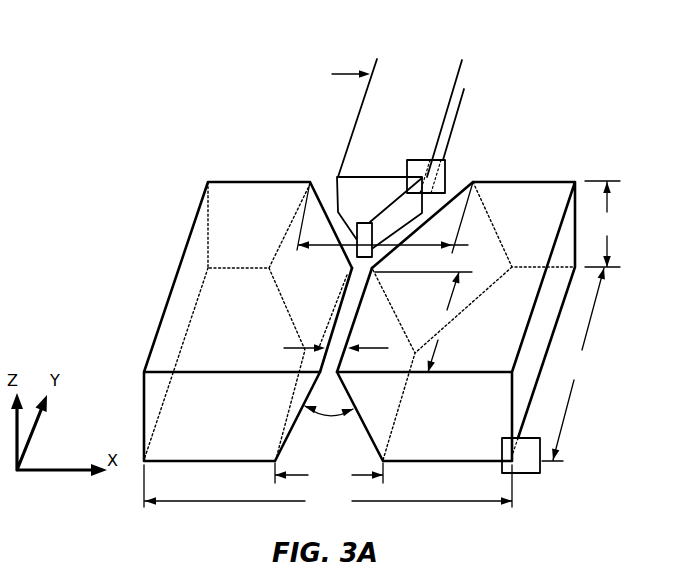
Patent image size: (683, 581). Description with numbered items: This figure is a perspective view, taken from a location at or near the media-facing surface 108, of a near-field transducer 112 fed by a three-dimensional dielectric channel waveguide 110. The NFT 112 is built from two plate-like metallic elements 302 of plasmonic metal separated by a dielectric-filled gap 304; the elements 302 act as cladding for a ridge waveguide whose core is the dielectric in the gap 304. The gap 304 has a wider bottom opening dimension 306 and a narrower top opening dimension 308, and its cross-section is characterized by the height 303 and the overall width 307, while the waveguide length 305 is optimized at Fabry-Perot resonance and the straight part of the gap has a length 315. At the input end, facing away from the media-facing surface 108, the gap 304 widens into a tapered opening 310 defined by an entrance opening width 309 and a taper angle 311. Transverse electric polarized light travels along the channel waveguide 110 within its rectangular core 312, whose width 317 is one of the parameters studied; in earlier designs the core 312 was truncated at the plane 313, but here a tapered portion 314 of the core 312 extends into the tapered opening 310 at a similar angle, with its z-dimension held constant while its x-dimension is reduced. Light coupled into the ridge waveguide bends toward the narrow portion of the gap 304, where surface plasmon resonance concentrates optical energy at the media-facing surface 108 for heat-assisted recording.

The media-facing surface 108 is at (538, 473).
The channel waveguide 110 is at (488, 131).
The near-field transducer 112 is at (143, 170).
The plate-like metallic elements 302 is at (163, 311).
The height 303 is at (605, 224).
The gap 304 is at (346, 320).
The waveguide length 305 is at (573, 364).
The bottom opening dimension 306 is at (329, 475).
The overall width 307 is at (328, 488).
The top opening dimension 308 is at (319, 350).
The entrance opening width 309 is at (399, 220).
The tapered opening 310 is at (330, 200).
The taper angle 311 is at (329, 422).
The channel waveguide core 312 is at (368, 118).
The plane 313 is at (428, 158).
The tapered portion 314 is at (370, 193).
The NFT gap straight part length 315 is at (423, 322).
The waveguide width 317 is at (468, 74).